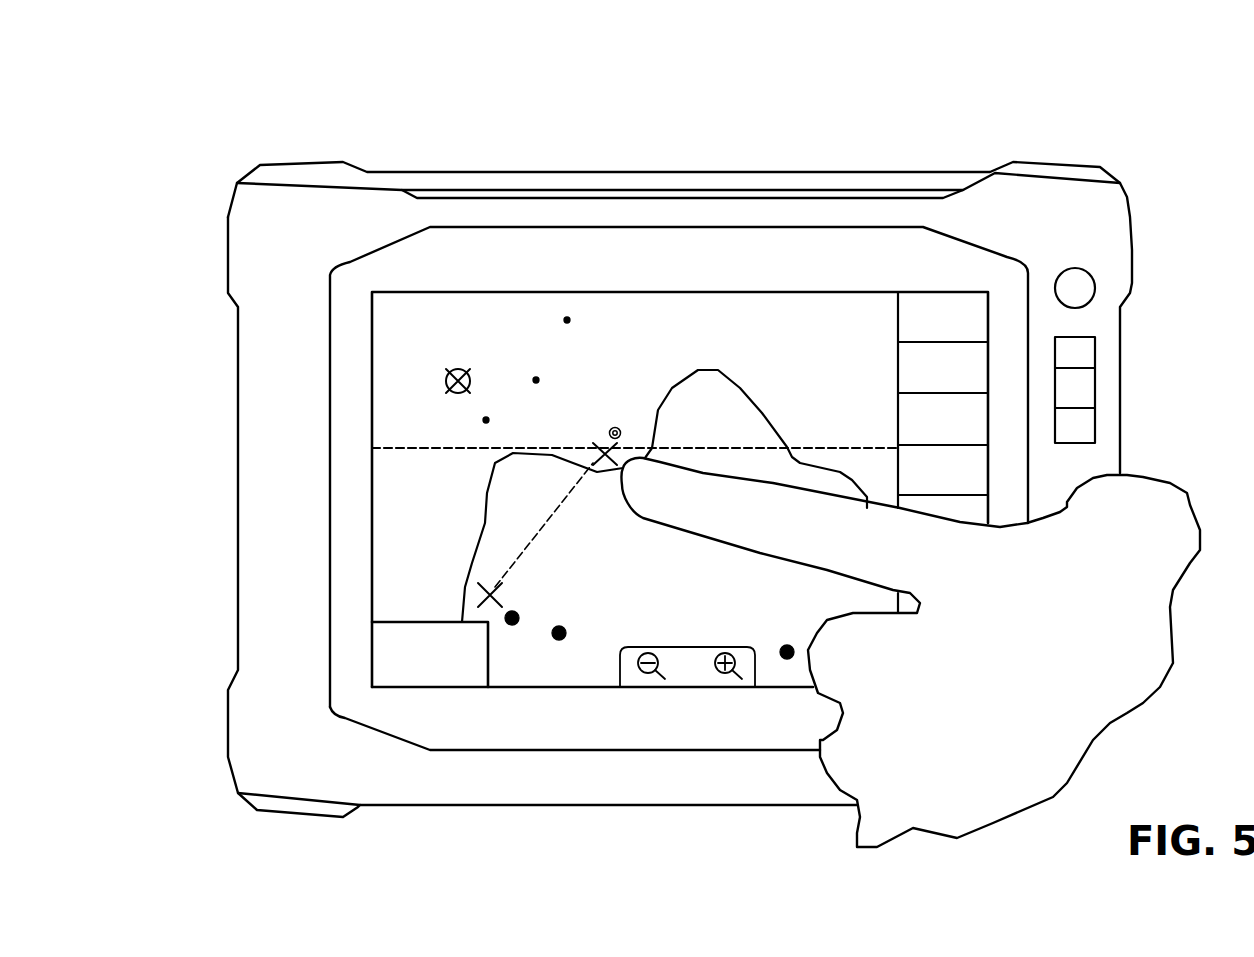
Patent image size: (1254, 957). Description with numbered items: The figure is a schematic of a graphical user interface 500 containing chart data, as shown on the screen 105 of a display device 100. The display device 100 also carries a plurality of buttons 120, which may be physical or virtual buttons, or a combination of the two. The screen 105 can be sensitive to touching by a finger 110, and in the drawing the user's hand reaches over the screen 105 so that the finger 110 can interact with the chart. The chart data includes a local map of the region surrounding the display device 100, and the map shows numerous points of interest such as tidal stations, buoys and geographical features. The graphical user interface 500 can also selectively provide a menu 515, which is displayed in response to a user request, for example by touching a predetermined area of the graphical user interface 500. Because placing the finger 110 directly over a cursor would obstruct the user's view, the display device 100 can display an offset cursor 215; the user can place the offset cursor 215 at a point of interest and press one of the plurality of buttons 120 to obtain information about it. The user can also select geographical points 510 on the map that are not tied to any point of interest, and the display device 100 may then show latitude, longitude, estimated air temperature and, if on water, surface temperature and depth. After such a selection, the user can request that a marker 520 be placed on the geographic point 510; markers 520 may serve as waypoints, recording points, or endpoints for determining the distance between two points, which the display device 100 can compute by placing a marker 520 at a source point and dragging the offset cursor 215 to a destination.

The display device 100 is at (1105, 243).
The screen 105 is at (387, 543).
The finger 110 is at (725, 500).
The plurality of buttons 120 is at (1095, 285).
The offset cursor 215 is at (617, 427).
The graphical user interface 500 is at (407, 420).
The geographical point 510 is at (446, 381).
The menu 515 is at (975, 457).
The marker 520 is at (457, 368).